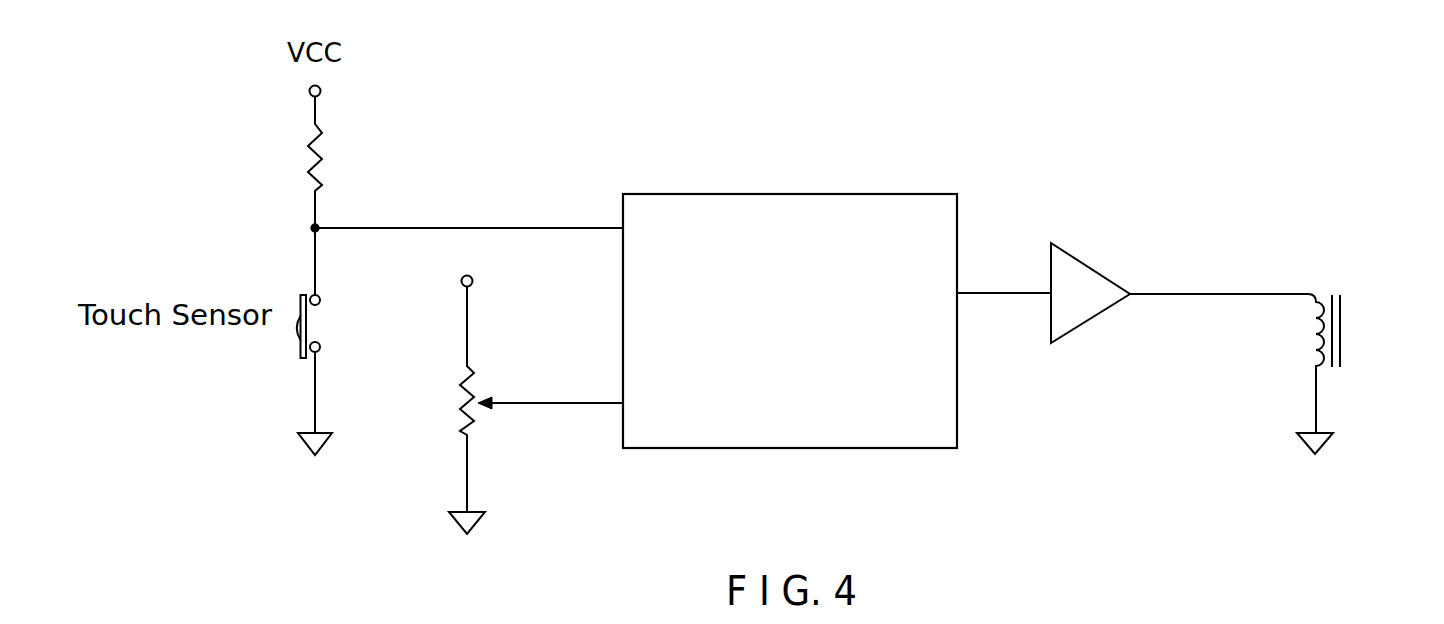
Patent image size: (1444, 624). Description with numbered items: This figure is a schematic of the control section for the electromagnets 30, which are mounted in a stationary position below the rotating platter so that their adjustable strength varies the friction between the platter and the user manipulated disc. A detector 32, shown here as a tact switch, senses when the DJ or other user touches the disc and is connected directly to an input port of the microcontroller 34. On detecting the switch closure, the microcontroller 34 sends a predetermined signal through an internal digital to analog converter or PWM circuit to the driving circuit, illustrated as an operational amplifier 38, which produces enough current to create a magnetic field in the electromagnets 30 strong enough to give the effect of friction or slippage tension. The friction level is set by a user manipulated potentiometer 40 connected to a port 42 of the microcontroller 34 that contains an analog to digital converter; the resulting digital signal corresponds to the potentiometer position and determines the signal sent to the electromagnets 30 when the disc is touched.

The electromagnets 30 is at (1350, 327).
The detector 32 is at (303, 346).
The microcontroller 34 is at (634, 193).
The operational amplifier 38 is at (1090, 322).
The potentiometer 40 is at (461, 418).
The port 42 is at (621, 405).